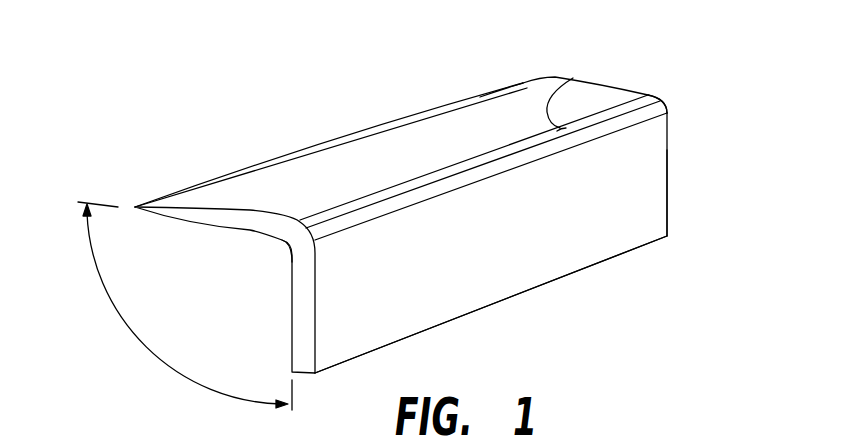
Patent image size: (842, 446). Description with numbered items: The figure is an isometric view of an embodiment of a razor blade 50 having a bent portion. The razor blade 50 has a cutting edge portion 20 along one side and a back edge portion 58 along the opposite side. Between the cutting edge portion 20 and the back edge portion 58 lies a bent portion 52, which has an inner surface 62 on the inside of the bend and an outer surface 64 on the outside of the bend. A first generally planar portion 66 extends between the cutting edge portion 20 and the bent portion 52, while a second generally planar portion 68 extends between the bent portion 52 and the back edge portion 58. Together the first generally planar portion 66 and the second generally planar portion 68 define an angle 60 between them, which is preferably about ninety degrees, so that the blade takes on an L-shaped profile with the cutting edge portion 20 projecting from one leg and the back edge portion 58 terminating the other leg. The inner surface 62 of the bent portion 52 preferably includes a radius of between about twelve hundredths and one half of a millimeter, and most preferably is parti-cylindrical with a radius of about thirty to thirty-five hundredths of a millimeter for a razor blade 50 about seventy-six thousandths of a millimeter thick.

The cutting edge portion 20 is at (183, 191).
The razor blade 50 is at (667, 75).
The bent portion 52 is at (663, 106).
The back edge portion 58 is at (603, 262).
The angle 60 is at (140, 338).
The inner surface 62 is at (283, 242).
The outer surface 64 is at (573, 78).
The first generally planar portion 66 is at (526, 91).
The second generally planar portion 68 is at (646, 203).